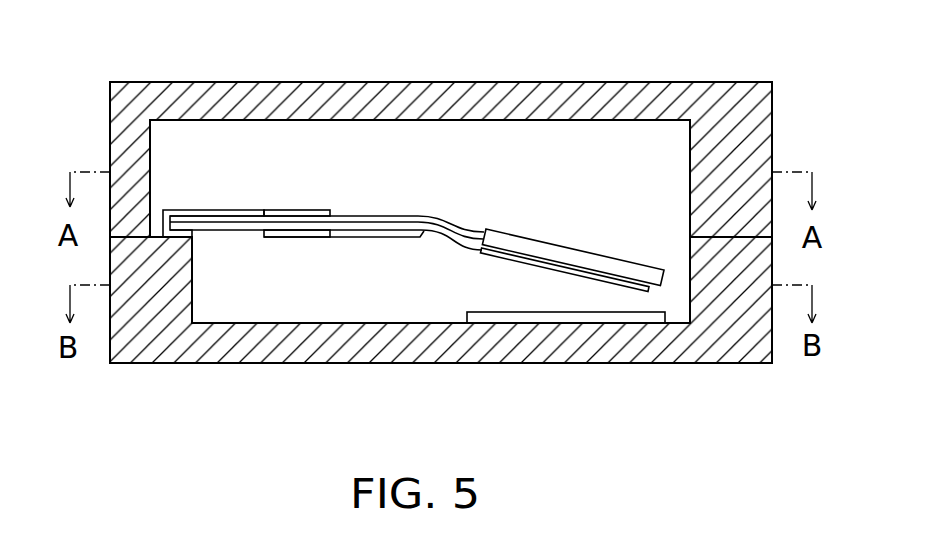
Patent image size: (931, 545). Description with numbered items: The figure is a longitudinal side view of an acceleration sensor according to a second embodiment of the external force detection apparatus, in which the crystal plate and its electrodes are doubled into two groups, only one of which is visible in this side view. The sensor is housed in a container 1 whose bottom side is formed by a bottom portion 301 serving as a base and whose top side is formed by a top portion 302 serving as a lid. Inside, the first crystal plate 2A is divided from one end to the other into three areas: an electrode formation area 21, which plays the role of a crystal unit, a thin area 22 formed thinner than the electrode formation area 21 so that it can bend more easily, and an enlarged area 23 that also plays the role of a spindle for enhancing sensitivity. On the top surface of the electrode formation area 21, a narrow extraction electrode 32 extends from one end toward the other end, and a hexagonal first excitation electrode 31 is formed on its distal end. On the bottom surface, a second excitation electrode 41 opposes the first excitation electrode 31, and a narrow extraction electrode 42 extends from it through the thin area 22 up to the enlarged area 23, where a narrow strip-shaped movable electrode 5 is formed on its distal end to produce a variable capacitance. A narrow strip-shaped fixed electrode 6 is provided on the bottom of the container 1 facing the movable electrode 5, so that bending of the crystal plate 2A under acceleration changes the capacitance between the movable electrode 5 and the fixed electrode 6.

The container 1 is at (622, 82).
The first crystal plate 2A is at (402, 153).
The electrode formation area 21 is at (363, 222).
The thin area 22 is at (452, 217).
The enlarged area 23 is at (538, 240).
The first excitation electrode 31 is at (303, 210).
The extraction electrode 32 is at (227, 210).
The second excitation electrode 41 is at (296, 240).
The extraction electrode 42 is at (372, 238).
The movable electrode 5 is at (523, 263).
The fixed electrode 6 is at (612, 318).
The bottom portion 301 is at (168, 363).
The top portion 302 is at (110, 122).